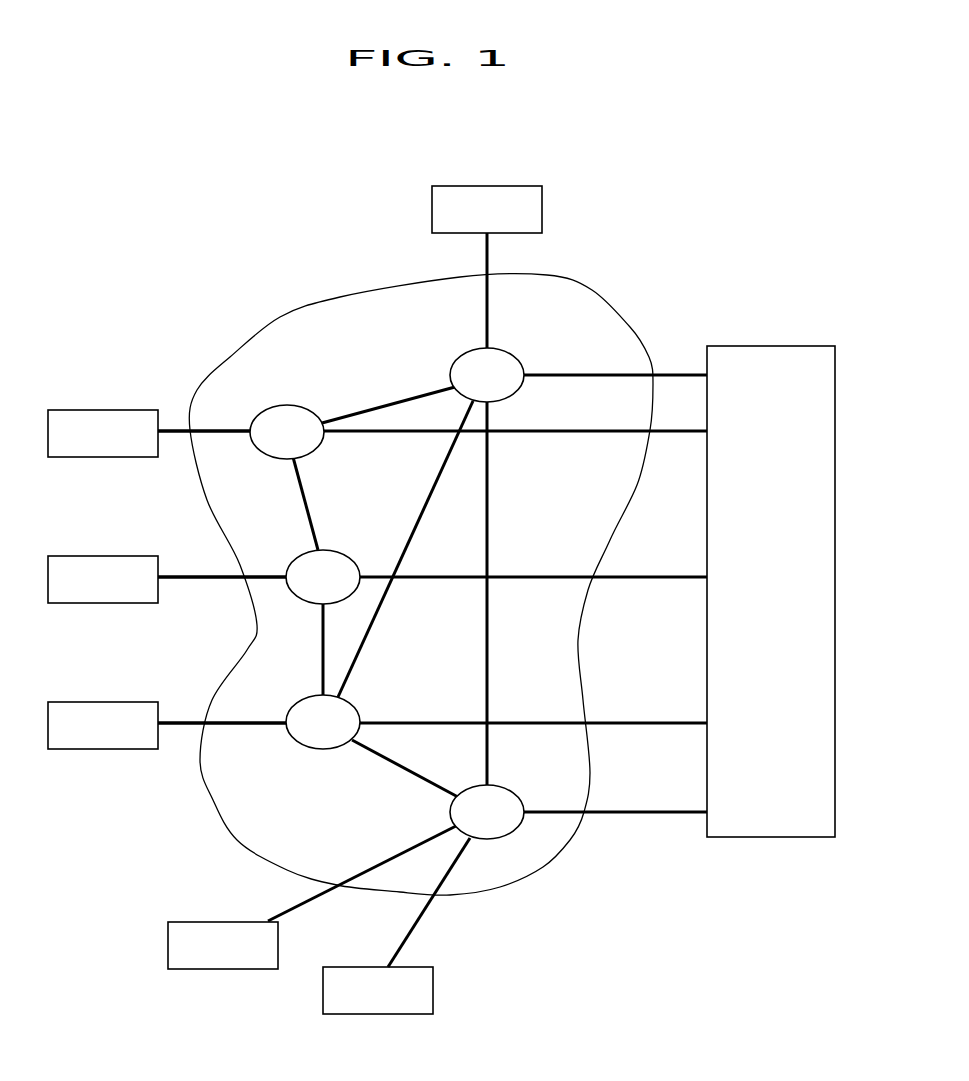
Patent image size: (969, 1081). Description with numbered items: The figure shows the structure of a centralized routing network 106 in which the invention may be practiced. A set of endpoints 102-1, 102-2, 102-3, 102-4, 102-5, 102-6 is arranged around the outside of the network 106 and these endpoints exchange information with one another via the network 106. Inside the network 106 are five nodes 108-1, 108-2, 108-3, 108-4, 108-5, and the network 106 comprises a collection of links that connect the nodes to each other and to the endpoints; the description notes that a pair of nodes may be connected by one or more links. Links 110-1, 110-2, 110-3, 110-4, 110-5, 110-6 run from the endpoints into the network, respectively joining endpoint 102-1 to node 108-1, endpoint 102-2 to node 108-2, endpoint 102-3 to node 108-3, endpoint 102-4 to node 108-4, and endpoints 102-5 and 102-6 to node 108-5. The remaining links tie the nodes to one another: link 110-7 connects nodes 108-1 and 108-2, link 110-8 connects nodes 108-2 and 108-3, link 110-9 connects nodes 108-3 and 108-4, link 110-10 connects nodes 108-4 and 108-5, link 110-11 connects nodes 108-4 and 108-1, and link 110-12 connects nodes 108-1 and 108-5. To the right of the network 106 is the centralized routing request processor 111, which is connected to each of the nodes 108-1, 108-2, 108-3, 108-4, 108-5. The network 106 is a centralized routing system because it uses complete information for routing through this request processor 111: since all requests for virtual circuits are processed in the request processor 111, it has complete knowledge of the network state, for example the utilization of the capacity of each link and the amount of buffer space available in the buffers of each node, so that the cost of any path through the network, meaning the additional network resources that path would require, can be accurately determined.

The endpoint 102-1 is at (545, 208).
The endpoint 102-2 is at (108, 410).
The endpoint 102-3 is at (90, 603).
The endpoint 102-4 is at (95, 749).
The endpoint 102-5 is at (168, 950).
The endpoint 102-6 is at (323, 998).
The network 106 is at (565, 845).
The node 108-1 is at (514, 365).
The node 108-2 is at (272, 455).
The node 108-3 is at (335, 553).
The node 108-4 is at (295, 742).
The node 108-5 is at (503, 790).
The link 110-1 is at (487, 325).
The link 110-2 is at (176, 434).
The link 110-3 is at (195, 580).
The link 110-4 is at (178, 726).
The link 110-5 is at (290, 905).
The link 110-6 is at (425, 918).
The link 110-7 is at (372, 404).
The link 110-8 is at (307, 492).
The link 110-9 is at (323, 632).
The link 110-10 is at (385, 758).
The link 110-11 is at (368, 640).
The link 110-12 is at (487, 489).
The centralized routing request processor 111 is at (765, 822).